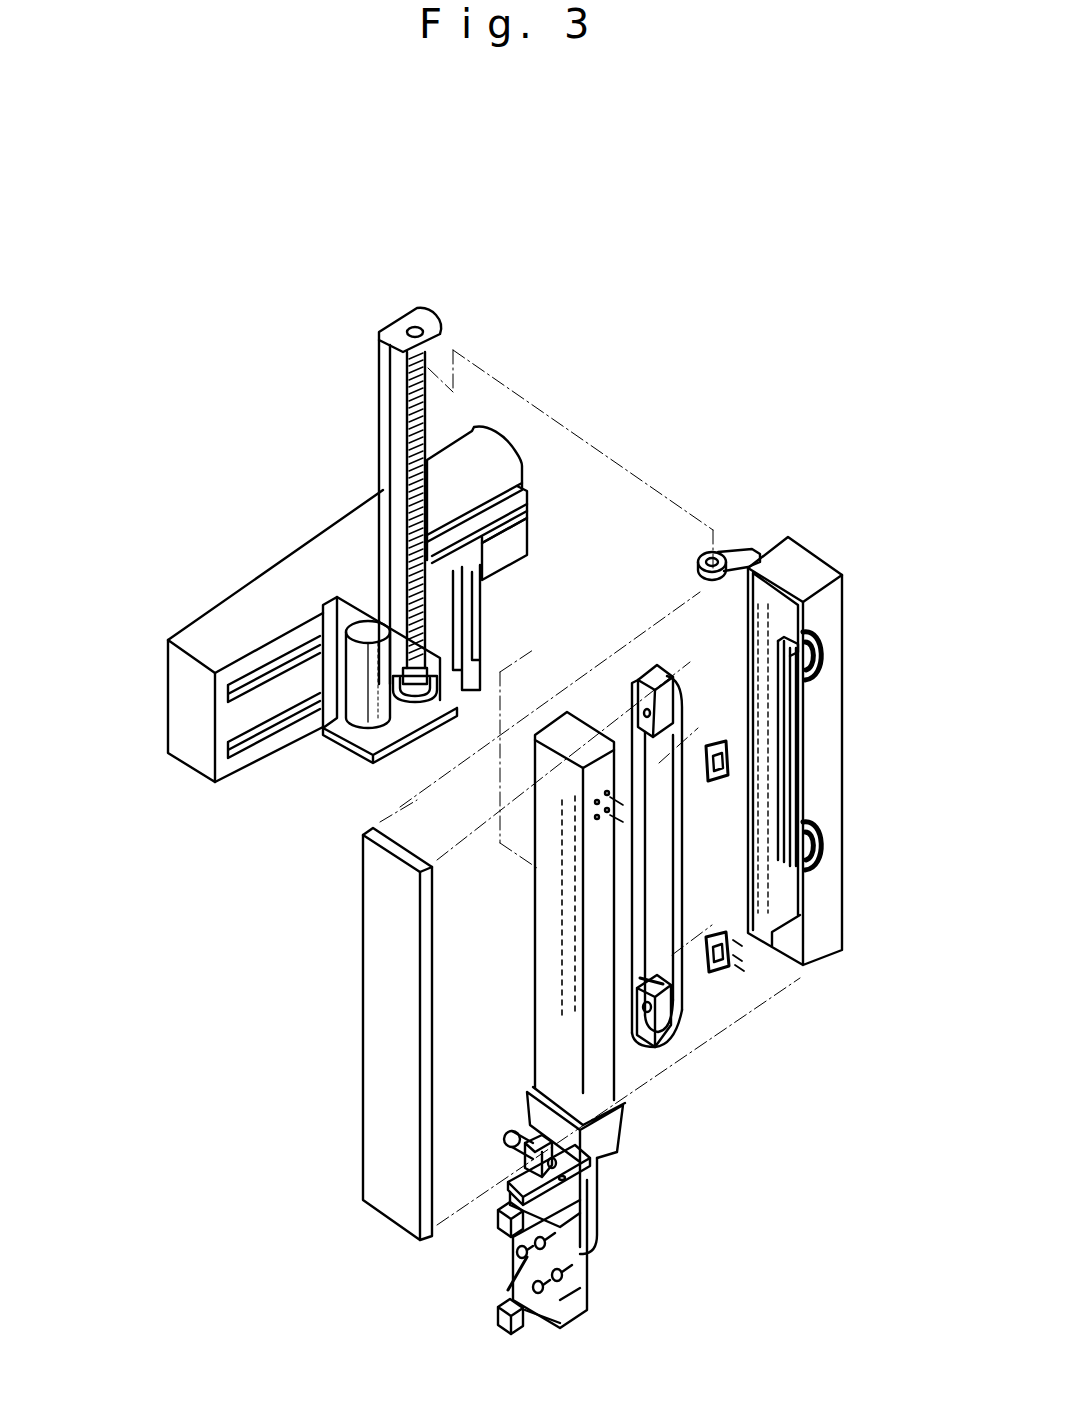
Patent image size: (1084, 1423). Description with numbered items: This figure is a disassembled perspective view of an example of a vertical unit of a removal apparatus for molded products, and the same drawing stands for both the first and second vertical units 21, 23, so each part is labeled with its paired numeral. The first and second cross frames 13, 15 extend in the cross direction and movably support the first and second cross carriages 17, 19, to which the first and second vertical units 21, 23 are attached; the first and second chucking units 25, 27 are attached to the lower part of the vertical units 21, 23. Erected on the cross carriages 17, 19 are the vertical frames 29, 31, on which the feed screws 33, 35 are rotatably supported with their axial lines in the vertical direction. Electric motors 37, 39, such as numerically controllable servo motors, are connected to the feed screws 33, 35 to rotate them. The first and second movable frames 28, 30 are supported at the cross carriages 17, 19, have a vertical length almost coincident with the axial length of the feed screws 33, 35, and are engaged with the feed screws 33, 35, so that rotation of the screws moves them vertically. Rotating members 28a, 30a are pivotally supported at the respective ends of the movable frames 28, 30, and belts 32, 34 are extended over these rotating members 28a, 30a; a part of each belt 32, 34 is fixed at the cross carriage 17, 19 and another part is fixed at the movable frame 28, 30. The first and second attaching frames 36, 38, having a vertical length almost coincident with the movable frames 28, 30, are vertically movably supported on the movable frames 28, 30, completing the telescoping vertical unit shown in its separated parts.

The first cross frame 13 is at (271, 636).
The second cross frame 15 is at (233, 620).
The first cross carriage 17 is at (375, 711).
The second cross carriage 19 is at (342, 732).
The first vertical unit 21 is at (590, 756).
The second vertical unit 23 is at (668, 323).
The first chucking unit 25 is at (631, 1232).
The second chucking unit 27 is at (590, 1236).
The first movable frame 28 is at (794, 724).
The second movable frame 30 is at (799, 567).
The rotating member 28a is at (676, 856).
The rotating member 30a is at (636, 701).
The vertical frame 29 is at (373, 481).
The vertical frame 31 is at (388, 373).
The belt 32 is at (737, 869).
The belt 34 is at (674, 823).
The feed screw 33 is at (362, 527).
The feed screw 35 is at (417, 427).
The first attaching frame 36 is at (494, 983).
The second attaching frame 38 is at (553, 943).
The electric motor 37 is at (290, 739).
The electric motor 39 is at (357, 690).